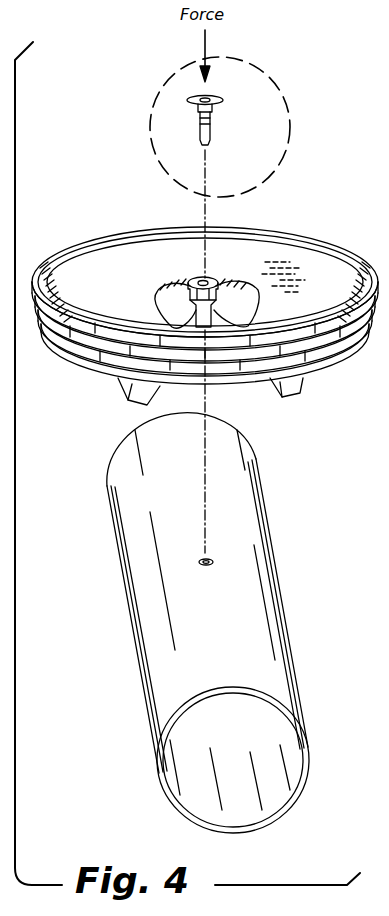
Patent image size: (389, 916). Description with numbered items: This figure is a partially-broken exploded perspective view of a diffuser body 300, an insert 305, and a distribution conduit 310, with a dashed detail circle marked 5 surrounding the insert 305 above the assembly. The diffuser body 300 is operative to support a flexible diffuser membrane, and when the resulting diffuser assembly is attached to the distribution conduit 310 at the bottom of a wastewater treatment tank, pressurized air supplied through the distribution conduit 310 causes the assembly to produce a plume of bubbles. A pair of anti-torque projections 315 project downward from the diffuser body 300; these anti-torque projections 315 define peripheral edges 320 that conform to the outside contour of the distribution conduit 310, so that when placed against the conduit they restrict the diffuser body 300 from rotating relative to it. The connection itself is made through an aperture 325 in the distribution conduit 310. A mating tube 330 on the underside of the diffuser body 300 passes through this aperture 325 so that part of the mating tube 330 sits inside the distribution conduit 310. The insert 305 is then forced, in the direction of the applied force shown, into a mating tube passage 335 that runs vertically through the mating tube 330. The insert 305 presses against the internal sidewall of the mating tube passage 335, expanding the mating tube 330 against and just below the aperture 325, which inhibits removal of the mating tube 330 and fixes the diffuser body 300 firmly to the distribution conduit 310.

The detail view region (FIG. 5) 5 is at (166, 74).
The diffuser body 300 is at (342, 238).
The insert 305 is at (232, 118).
The distribution conduit 310 is at (288, 556).
The anti-torque projections 315 is at (132, 392).
The peripheral edges 320 is at (276, 388).
The aperture 325 is at (200, 550).
The mating tube 330 is at (226, 302).
The mating tube passage 335 is at (194, 272).